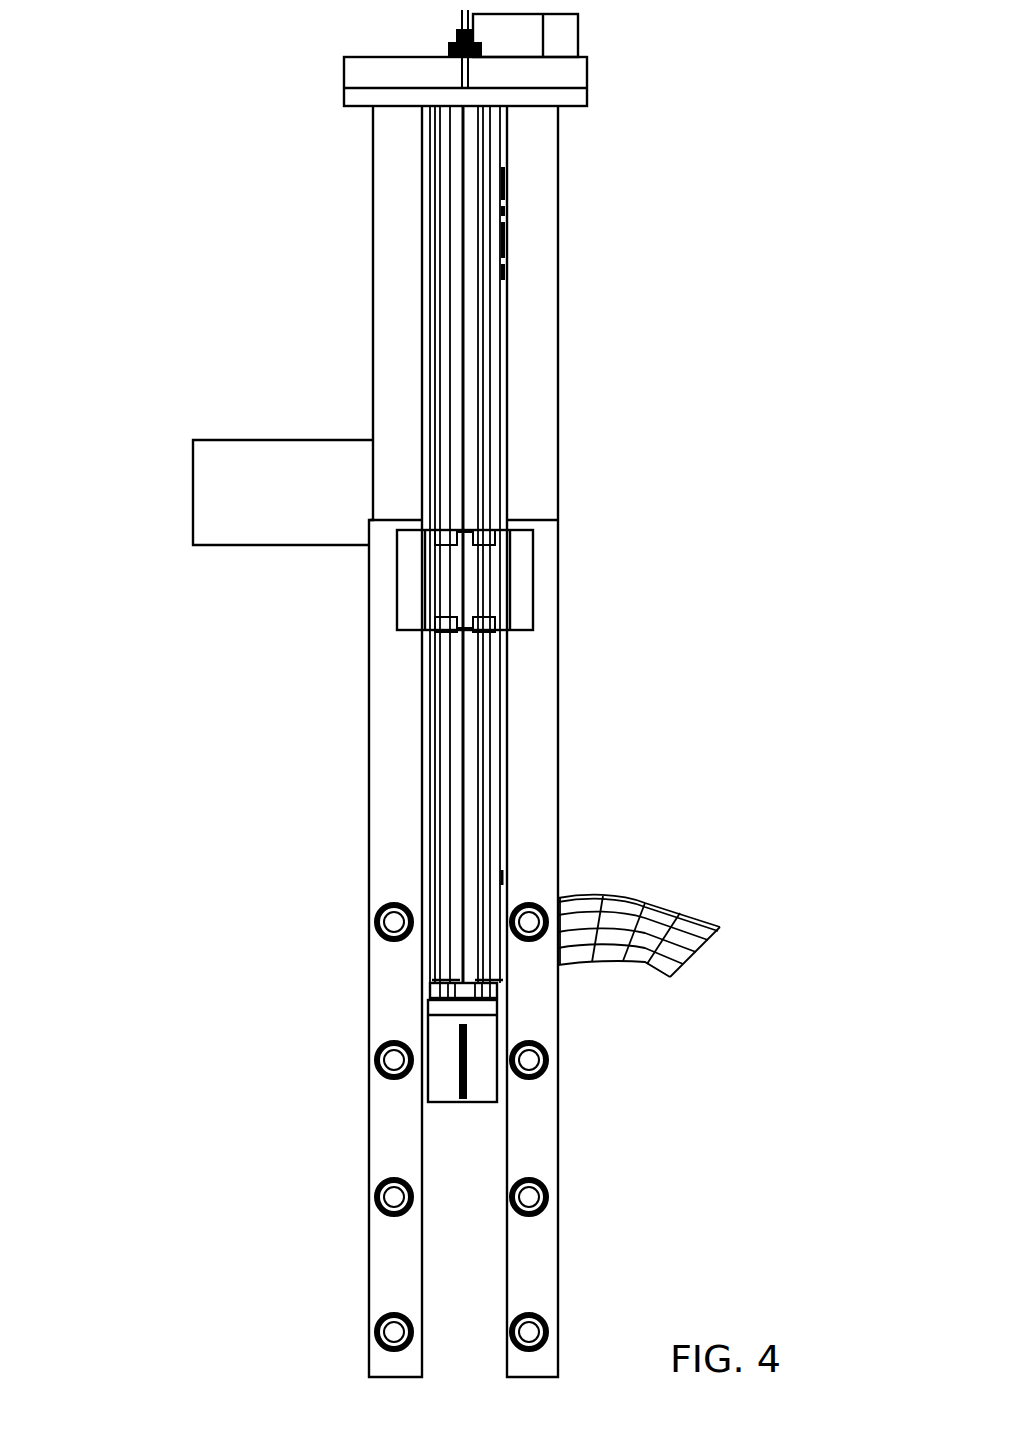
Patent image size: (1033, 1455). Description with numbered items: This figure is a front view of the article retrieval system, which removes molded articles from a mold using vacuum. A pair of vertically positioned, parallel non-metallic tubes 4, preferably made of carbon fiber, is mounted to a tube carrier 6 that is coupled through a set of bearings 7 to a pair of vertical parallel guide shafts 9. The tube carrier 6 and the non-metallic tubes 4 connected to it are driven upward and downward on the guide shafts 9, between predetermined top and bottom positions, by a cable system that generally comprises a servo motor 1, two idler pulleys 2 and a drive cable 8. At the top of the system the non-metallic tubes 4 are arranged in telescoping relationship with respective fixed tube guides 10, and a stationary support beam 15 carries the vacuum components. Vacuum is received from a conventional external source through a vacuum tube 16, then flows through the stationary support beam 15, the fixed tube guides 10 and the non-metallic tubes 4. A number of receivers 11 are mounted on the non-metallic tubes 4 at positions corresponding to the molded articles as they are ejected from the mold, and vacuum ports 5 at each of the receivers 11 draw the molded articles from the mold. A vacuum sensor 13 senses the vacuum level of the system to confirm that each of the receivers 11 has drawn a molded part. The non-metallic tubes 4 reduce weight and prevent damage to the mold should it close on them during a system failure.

The servo motor 1 is at (193, 545).
The idler pulleys 2 is at (465, 12).
The non-metallic tubes 4 is at (368, 1295).
The vacuum ports 5 is at (542, 1323).
The tube carrier 6 is at (466, 532).
The bearings 7 is at (448, 585).
The drive cable 8 is at (463, 803).
The guide shafts 9 is at (480, 544).
The fixed tube guides 10 is at (456, 741).
The receivers 11 is at (571, 1127).
The vacuum sensor 13 is at (578, 14).
The stationary support beam 15 is at (443, 1043).
The vacuum tube 16 is at (715, 927).